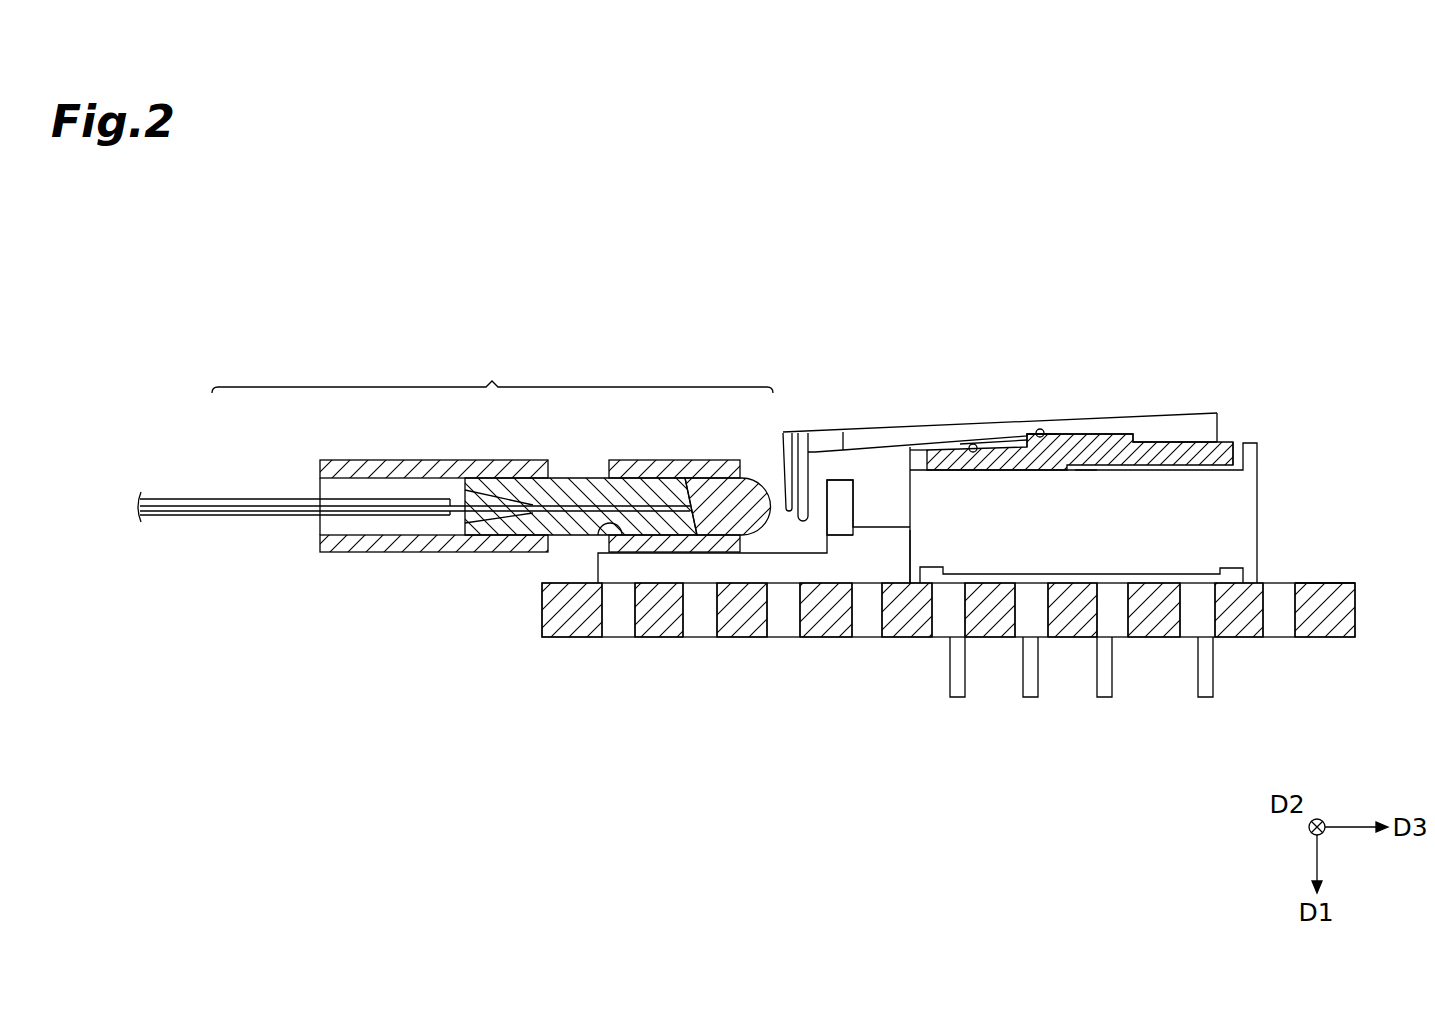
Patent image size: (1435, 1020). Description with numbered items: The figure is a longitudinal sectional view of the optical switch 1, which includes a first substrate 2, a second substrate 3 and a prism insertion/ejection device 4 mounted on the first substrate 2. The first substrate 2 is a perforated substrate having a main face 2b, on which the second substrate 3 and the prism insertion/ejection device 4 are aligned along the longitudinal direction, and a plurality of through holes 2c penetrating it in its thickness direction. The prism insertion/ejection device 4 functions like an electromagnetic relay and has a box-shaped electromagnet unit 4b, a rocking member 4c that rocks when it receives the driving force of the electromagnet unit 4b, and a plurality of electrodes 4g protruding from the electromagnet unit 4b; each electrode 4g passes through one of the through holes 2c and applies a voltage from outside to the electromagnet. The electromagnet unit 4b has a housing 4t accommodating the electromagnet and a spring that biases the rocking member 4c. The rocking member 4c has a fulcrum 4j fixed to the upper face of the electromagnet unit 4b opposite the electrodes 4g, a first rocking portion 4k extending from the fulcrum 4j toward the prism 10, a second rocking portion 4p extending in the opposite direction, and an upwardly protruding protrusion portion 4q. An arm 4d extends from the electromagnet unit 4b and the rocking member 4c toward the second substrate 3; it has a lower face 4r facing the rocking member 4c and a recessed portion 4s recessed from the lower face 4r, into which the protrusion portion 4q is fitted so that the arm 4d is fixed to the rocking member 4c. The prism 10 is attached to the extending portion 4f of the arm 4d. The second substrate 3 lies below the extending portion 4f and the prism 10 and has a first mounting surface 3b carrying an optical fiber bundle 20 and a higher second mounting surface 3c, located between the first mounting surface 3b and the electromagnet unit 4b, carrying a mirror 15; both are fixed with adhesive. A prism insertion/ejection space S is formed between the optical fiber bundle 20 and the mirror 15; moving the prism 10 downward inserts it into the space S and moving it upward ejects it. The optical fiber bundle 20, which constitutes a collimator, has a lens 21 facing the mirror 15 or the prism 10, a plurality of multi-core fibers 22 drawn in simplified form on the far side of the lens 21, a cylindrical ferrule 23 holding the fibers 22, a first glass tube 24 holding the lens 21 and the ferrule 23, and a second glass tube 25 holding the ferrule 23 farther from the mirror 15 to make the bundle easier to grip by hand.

The optical switch 1 is at (1181, 309).
The first substrate 2 is at (1338, 578).
The main face 2b is at (1308, 578).
The through holes 2c is at (605, 620).
The second substrate 3 is at (671, 556).
The first mounting surface 3b is at (606, 532).
The second mounting surface 3c is at (843, 527).
The prism insertion/ejection device 4 is at (1197, 404).
The electromagnet unit 4b is at (1235, 462).
The rocking member 4c is at (1165, 457).
The arm 4d is at (1000, 440).
The extending portion 4f is at (833, 437).
The electrodes 4g is at (957, 697).
The fulcrum 4j is at (1085, 467).
The first rocking portion 4k is at (937, 462).
The second rocking portion 4p is at (1222, 440).
The protrusion portion 4q is at (1058, 434).
The lower face 4r is at (973, 444).
The recessed portion 4s is at (1040, 429).
The housing 4t is at (923, 543).
The prism 10 is at (800, 500).
The mirror 15 is at (843, 493).
The optical fiber bundle 20 is at (492, 373).
The lens 21 is at (755, 480).
The multi-core fibers 22 is at (224, 498).
The ferrule 23 is at (573, 480).
The first glass tube 24 is at (669, 470).
The second glass tube 25 is at (407, 470).
The prism insertion/ejection space S is at (766, 548).